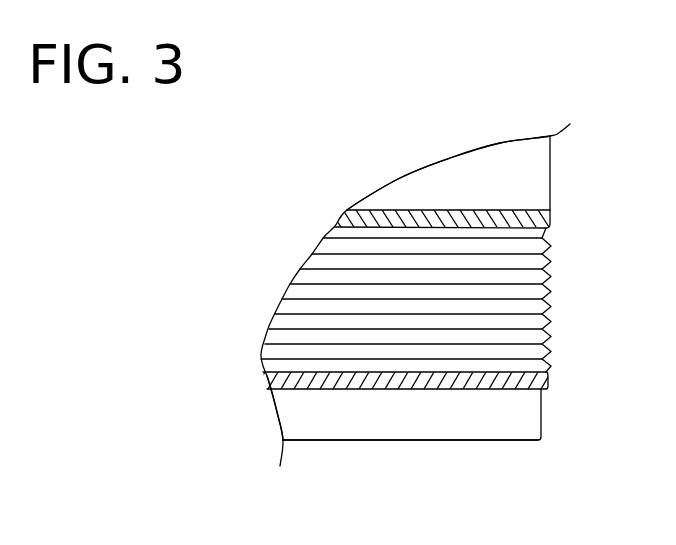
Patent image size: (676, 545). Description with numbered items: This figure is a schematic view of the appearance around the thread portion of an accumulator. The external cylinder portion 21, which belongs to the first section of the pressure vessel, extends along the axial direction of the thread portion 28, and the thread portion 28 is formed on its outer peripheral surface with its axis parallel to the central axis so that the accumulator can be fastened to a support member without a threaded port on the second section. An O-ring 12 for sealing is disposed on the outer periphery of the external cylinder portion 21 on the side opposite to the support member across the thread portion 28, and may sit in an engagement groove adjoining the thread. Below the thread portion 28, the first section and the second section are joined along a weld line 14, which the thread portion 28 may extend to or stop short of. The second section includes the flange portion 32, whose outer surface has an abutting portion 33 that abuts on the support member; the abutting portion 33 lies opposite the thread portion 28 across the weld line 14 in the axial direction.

The external cylinder portion 21 is at (537, 172).
The O-ring 12 is at (550, 224).
The thread portion 28 is at (558, 231).
The weld line 14 is at (546, 380).
The flange portion 32 is at (541, 418).
The abutting portion 33 is at (395, 440).